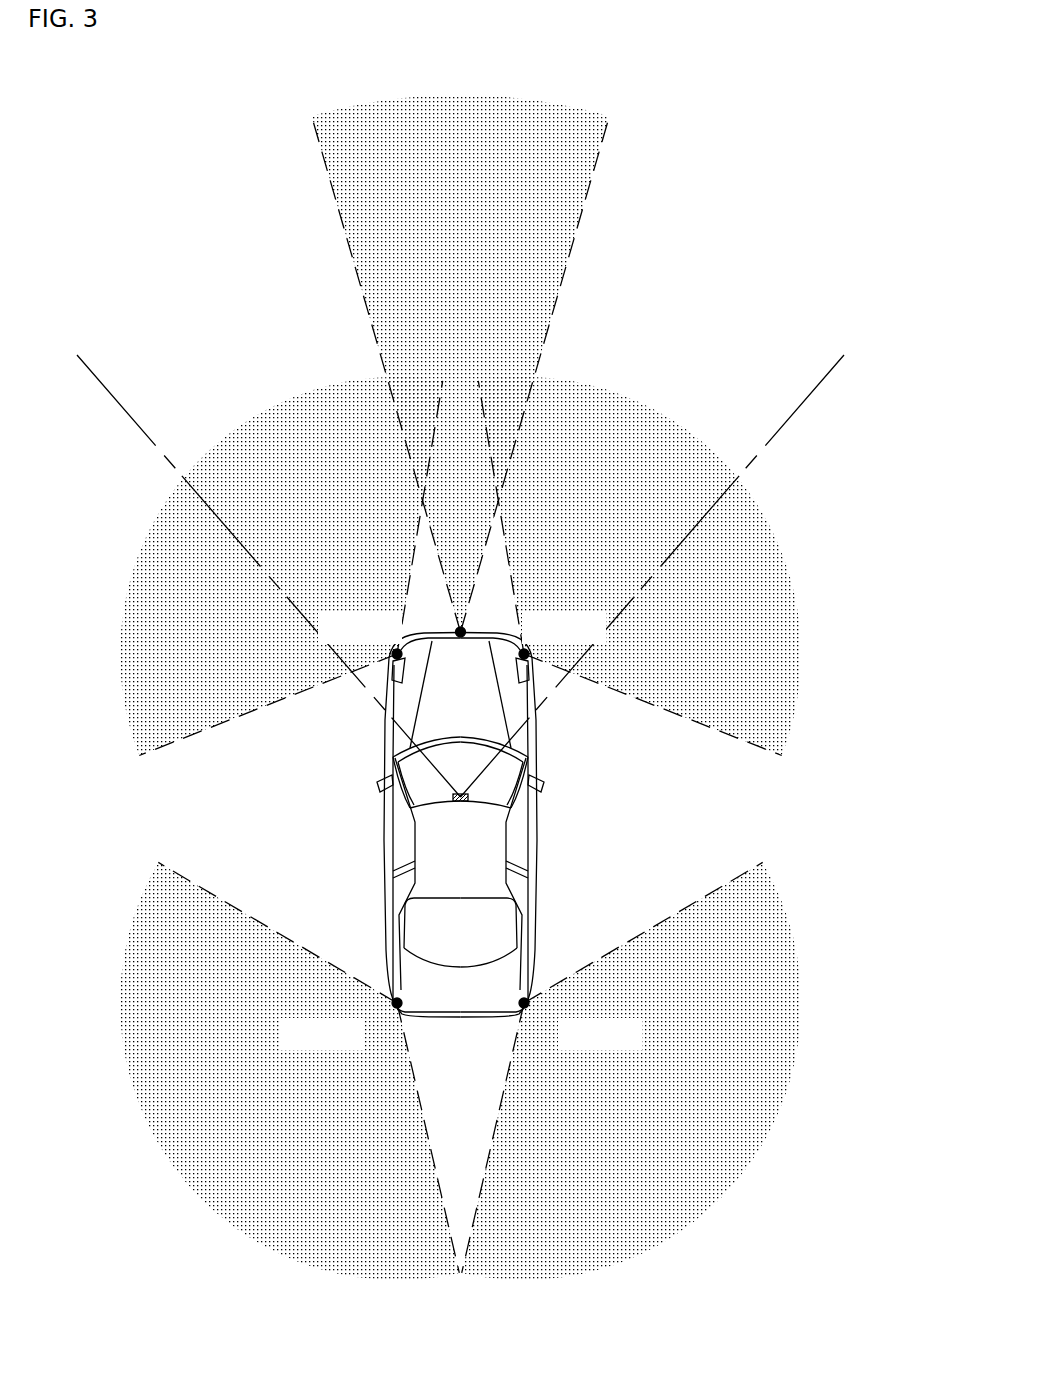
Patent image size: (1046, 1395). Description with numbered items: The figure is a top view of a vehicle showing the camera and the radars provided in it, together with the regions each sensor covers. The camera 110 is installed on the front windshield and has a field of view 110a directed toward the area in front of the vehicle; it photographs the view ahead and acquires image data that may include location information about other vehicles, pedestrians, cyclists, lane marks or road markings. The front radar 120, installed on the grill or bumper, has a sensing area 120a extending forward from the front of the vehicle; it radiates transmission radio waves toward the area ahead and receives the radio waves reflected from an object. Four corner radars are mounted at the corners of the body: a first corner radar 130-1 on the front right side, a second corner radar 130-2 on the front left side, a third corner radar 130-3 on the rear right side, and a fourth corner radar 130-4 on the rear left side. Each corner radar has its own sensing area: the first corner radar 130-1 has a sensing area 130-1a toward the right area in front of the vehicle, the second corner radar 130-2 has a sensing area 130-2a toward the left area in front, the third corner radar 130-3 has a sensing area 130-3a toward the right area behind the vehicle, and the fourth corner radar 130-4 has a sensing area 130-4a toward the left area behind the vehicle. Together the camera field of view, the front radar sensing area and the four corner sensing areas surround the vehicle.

The camera 110 is at (468, 797).
The field of view 110a is at (802, 407).
The front radar 120 is at (460, 632).
The sensing area 120a is at (552, 240).
The first corner radar 130-1 is at (524, 654).
The second corner radar 130-2 is at (397, 654).
The third corner radar 130-3 is at (524, 1003).
The fourth corner radar 130-4 is at (397, 1003).
The sensing area 130-1a is at (695, 403).
The sensing area 130-2a is at (252, 437).
The sensing area 130-3a is at (744, 1148).
The sensing area 130-4a is at (177, 1148).